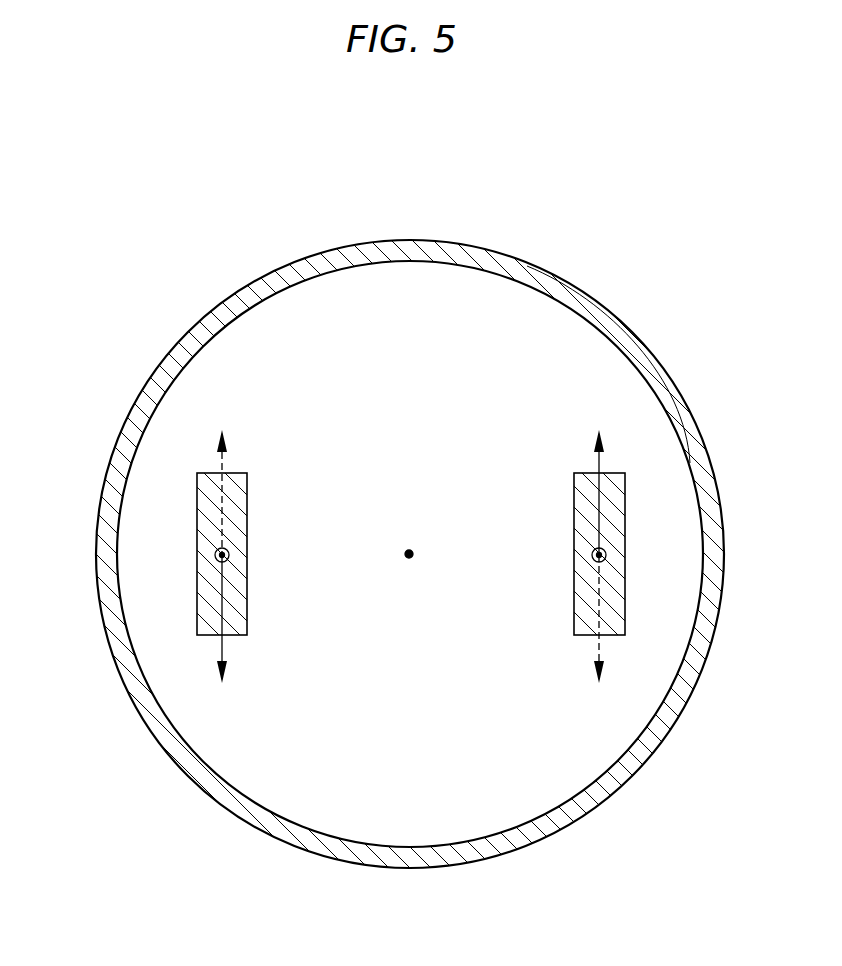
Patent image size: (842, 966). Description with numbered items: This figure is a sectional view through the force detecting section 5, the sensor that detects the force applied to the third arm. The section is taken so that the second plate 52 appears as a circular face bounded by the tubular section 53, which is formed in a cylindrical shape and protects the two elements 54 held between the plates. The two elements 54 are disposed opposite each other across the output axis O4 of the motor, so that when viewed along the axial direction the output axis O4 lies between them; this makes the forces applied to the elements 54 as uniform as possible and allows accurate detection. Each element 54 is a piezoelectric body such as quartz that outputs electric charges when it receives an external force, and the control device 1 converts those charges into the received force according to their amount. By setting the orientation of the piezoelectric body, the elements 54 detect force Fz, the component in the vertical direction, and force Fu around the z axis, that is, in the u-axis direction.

The control device 1 is at (166, 196).
The force detecting section 5 is at (519, 231).
The second plate 52 is at (293, 340).
The tubular section 53 is at (684, 426).
The element 54 is at (208, 523).
The force Fu is at (220, 461).
The force Fz is at (213, 555).
The output axis of the motor O4 is at (409, 554).